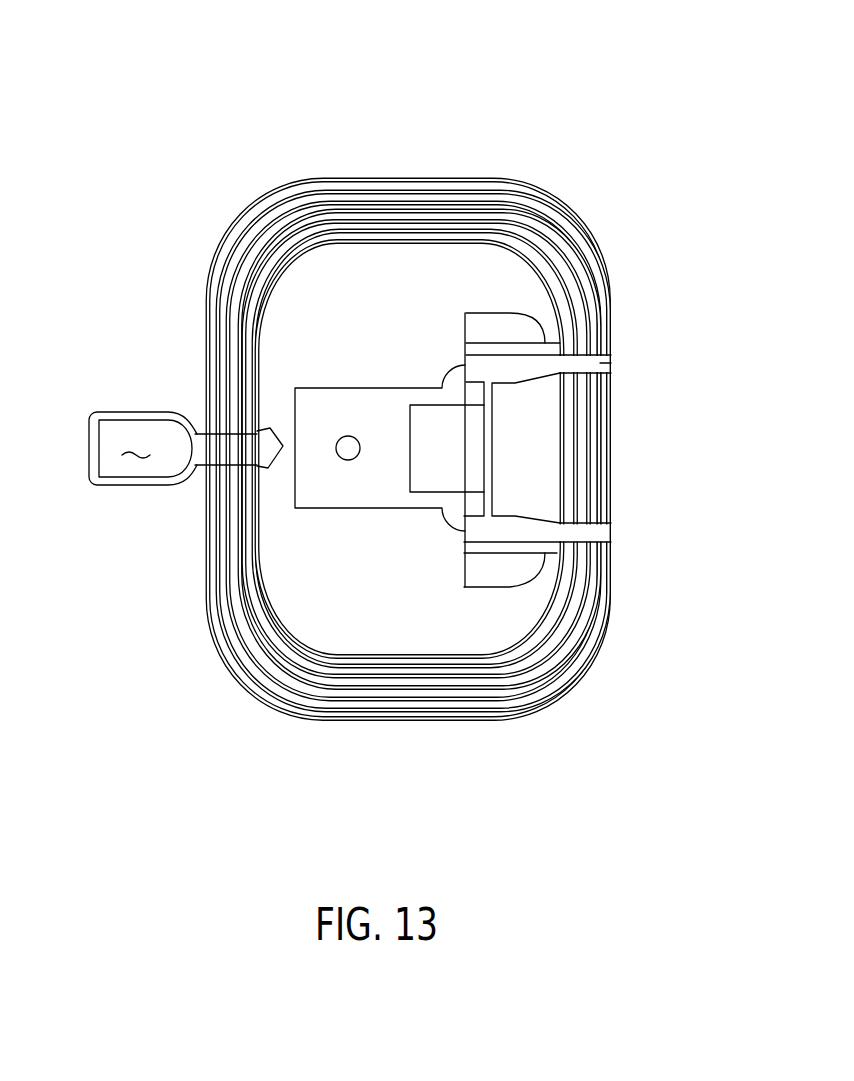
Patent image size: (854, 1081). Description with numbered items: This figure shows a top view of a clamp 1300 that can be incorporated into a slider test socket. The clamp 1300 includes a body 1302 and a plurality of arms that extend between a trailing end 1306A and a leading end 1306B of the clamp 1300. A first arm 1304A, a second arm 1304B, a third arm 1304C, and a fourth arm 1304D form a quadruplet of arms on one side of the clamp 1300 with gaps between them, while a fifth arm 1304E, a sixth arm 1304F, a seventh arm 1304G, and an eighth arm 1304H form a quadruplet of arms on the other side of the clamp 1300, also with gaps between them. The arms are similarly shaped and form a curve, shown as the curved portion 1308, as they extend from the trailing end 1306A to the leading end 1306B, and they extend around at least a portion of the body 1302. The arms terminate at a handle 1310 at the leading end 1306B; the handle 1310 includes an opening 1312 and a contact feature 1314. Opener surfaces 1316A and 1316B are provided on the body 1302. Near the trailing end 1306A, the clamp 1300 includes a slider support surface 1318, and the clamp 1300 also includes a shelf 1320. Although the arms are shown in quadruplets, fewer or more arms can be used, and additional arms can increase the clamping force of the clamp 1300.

The clamp 1300 is at (136, 91).
The body 1302 is at (612, 358).
The first arm 1304A is at (575, 230).
The second arm 1304B is at (545, 237).
The third arm 1304C is at (500, 238).
The fourth arm 1304D is at (452, 245).
The fifth arm 1304E is at (597, 628).
The sixth arm 1304F is at (558, 650).
The seventh arm 1304G is at (502, 660).
The eighth arm 1304H is at (443, 655).
The trailing end 1306A is at (611, 541).
The leading end 1306B is at (210, 378).
The curved portion 1308 is at (372, 190).
The handle 1310 is at (89, 438).
The opening 1312 is at (121, 452).
The contact feature 1314 is at (282, 445).
The opener surface 1316A is at (487, 322).
The opener surface 1316B is at (470, 573).
The slider support surface 1318 is at (472, 350).
The shelf 1320 is at (375, 403).